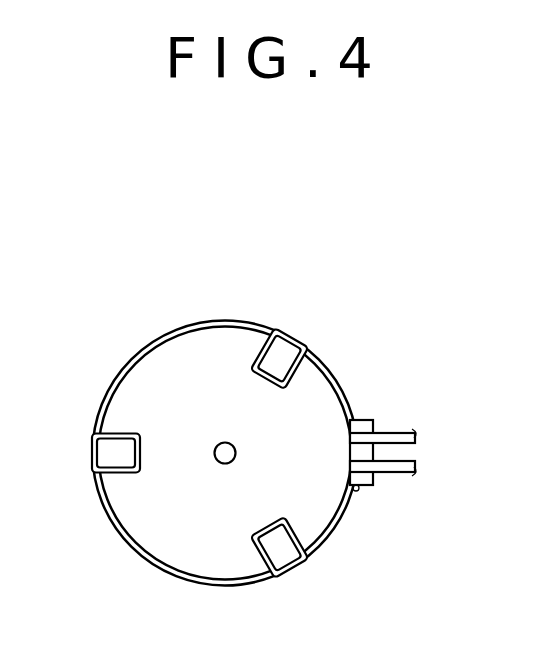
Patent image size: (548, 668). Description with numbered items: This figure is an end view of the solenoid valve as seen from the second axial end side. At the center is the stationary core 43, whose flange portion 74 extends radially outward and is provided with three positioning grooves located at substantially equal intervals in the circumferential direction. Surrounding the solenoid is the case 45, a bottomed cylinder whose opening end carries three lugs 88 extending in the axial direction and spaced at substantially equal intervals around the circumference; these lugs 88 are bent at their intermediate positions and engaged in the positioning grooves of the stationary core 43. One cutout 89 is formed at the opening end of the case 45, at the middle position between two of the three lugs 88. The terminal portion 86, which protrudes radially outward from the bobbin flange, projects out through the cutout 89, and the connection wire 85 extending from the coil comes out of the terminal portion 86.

The stationary core 43 is at (111, 516).
The case 45 is at (120, 373).
The flange portion 74 is at (170, 368).
The connection wire 85 is at (418, 475).
The terminal portion 86 is at (363, 420).
The lugs 88 is at (110, 453).
The cutout 89 is at (356, 491).